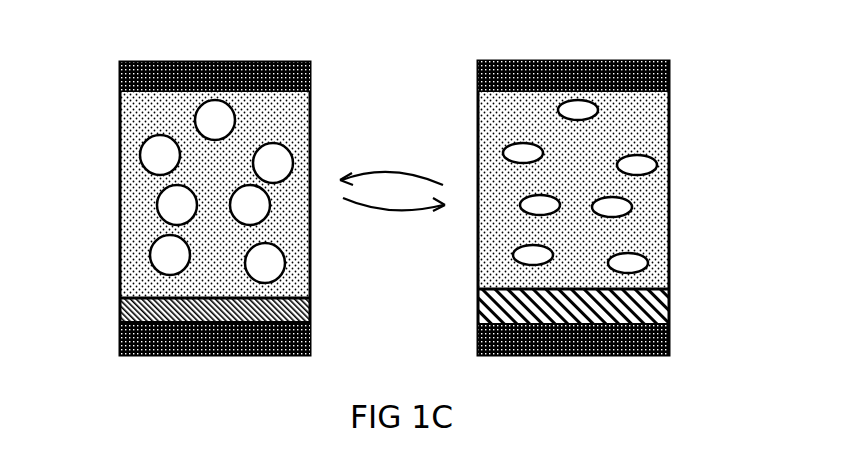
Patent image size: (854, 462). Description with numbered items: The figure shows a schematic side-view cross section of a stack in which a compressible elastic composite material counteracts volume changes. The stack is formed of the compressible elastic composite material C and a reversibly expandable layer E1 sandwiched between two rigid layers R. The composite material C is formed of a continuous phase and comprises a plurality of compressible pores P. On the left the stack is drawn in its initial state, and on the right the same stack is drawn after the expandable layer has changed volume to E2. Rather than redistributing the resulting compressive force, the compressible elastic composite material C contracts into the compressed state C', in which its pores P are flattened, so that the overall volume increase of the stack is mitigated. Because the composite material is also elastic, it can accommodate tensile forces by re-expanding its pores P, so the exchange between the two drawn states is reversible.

The compressible elastic composite material C is at (162, 208).
The compressible elastic composite material (compressed state) C' is at (627, 208).
The rigid layer R is at (148, 75).
The compressible pore P is at (160, 153).
The reversibly expandable layer (initial state) E1 is at (150, 313).
The reversibly expandable layer (expanded state) E2 is at (647, 314).